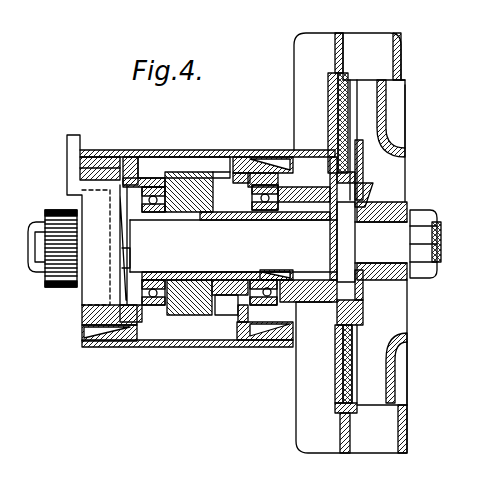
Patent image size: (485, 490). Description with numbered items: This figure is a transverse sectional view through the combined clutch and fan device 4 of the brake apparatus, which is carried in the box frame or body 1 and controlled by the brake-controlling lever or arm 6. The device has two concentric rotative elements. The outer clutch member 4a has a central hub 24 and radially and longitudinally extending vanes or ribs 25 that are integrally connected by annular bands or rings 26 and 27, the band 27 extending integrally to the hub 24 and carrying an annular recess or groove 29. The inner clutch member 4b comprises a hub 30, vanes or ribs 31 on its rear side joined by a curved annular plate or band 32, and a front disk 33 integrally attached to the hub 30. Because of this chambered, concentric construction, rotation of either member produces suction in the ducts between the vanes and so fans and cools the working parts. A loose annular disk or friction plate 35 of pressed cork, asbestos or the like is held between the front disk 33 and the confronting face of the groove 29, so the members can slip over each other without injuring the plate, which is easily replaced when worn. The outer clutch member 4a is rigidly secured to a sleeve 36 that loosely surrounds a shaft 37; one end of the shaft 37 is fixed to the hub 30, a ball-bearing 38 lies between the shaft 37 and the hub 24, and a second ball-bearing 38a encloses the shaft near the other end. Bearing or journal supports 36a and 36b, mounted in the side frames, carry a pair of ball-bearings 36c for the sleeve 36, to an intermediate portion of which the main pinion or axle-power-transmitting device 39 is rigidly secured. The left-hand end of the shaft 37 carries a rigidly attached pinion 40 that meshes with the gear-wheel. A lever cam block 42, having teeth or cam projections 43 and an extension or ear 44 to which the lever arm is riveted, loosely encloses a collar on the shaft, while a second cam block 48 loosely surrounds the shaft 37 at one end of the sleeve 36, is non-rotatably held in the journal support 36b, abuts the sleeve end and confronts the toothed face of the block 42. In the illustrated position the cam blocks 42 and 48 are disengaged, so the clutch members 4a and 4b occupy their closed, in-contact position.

The box frame or body 1 is at (199, 150).
The brake-controlling lever or arm 6 is at (67, 140).
The central hub 24 is at (284, 185).
The vanes or ribs 25 is at (294, 70).
The annular band or ring 26 is at (400, 40).
The annular band or ring 27 is at (343, 43).
The annular recess or groove 29 is at (328, 98).
The hub 30 is at (407, 207).
The vanes or ribs 31 is at (398, 113).
The curved annular plate or band 32 is at (383, 107).
The front disk 33 is at (355, 135).
The loose annular disk or friction plate 35 is at (338, 120).
The sleeve 36 is at (158, 222).
The bearing or journal support 36a is at (248, 189).
The bearing or journal support 36b is at (184, 167).
The ball-bearings 36c is at (157, 315).
The shaft 37 is at (233, 246).
The ball-bearing 38 is at (355, 237).
The second ball-bearing 38a is at (83, 306).
The main pinion or axle-power-transmitting device 39 is at (208, 176).
The pinion 40 is at (55, 287).
The lever cam block 42 is at (85, 315).
The teeth or cam projections 43 is at (137, 343).
The extension or ear 44 is at (80, 172).
The second cam block 48 is at (131, 245).
The combined clutch and fan device 4 is at (342, 22).
The outer clutch member 4a is at (284, 31).
The inner clutch member 4b is at (436, 170).